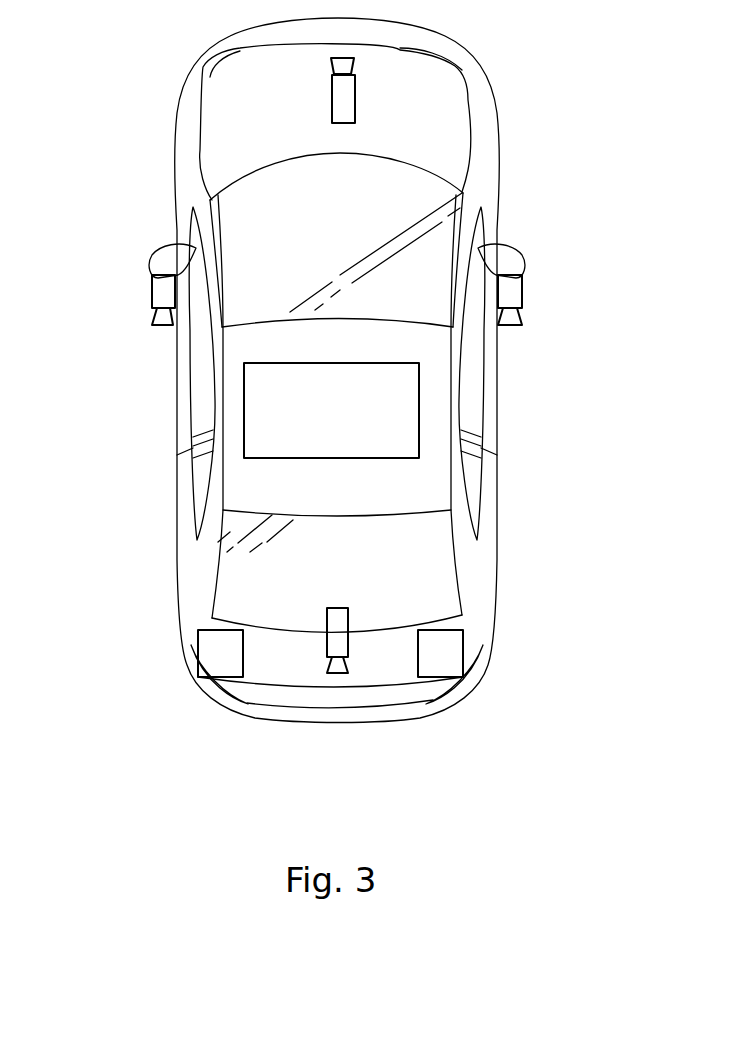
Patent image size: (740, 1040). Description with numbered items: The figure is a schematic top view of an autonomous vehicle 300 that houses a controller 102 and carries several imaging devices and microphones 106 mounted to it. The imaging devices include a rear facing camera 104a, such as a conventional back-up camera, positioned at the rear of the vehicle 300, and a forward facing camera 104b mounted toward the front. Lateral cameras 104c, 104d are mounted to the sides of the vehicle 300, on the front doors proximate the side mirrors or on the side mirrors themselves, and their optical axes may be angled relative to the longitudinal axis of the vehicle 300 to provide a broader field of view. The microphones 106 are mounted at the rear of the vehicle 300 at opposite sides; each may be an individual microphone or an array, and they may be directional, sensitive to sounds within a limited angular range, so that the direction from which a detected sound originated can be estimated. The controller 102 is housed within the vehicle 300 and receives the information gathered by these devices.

The vehicle 300 is at (303, 675).
The controller 102 is at (331, 410).
The rear facing camera 104a is at (323, 628).
The forward facing camera 104b is at (327, 98).
The lateral camera 104c is at (158, 293).
The lateral camera 104d is at (513, 290).
The microphones 106 is at (218, 647).